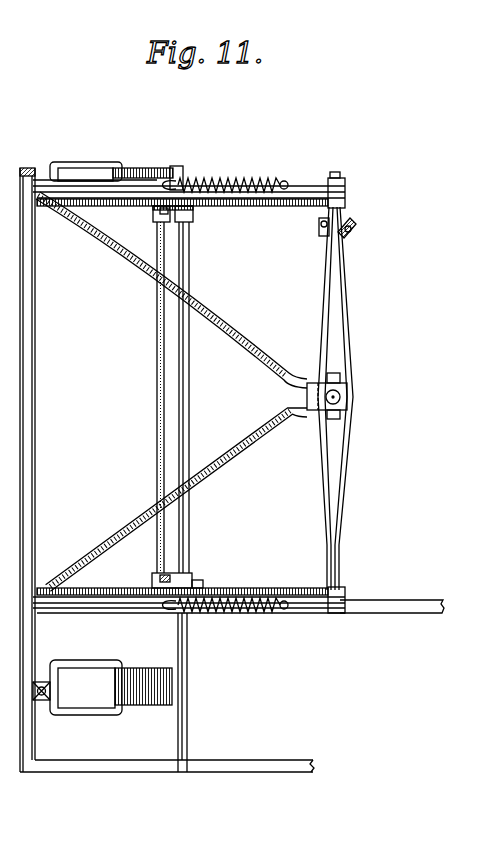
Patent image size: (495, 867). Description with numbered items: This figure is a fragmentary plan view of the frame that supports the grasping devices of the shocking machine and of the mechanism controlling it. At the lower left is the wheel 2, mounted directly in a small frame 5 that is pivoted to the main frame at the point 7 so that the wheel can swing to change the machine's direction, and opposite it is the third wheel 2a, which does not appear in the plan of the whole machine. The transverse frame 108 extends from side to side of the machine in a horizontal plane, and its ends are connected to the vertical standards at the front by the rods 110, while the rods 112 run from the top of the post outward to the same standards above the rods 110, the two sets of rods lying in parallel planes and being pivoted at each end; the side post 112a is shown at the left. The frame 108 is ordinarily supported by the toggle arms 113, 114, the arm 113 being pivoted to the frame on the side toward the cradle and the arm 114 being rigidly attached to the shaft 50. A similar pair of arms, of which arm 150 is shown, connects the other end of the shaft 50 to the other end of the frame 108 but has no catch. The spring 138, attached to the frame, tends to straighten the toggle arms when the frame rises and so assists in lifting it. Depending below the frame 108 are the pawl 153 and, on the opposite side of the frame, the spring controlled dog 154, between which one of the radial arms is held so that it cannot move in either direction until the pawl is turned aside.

The wheel 2 is at (140, 670).
The third wheel 2a is at (133, 170).
The small frame 5 is at (97, 708).
The pivot point 7 is at (44, 702).
The shaft 50 is at (157, 445).
The transverse frame 108 is at (349, 324).
The rod 110 is at (292, 199).
The rod 112 is at (273, 375).
The side post 112a is at (33, 291).
The toggle arm 113 is at (242, 587).
The toggle arm 114 is at (160, 215).
The spring 138 is at (247, 180).
The toggle arm 150 is at (242, 207).
The pawl 153 is at (350, 233).
The spring controlled dog 154 is at (326, 235).